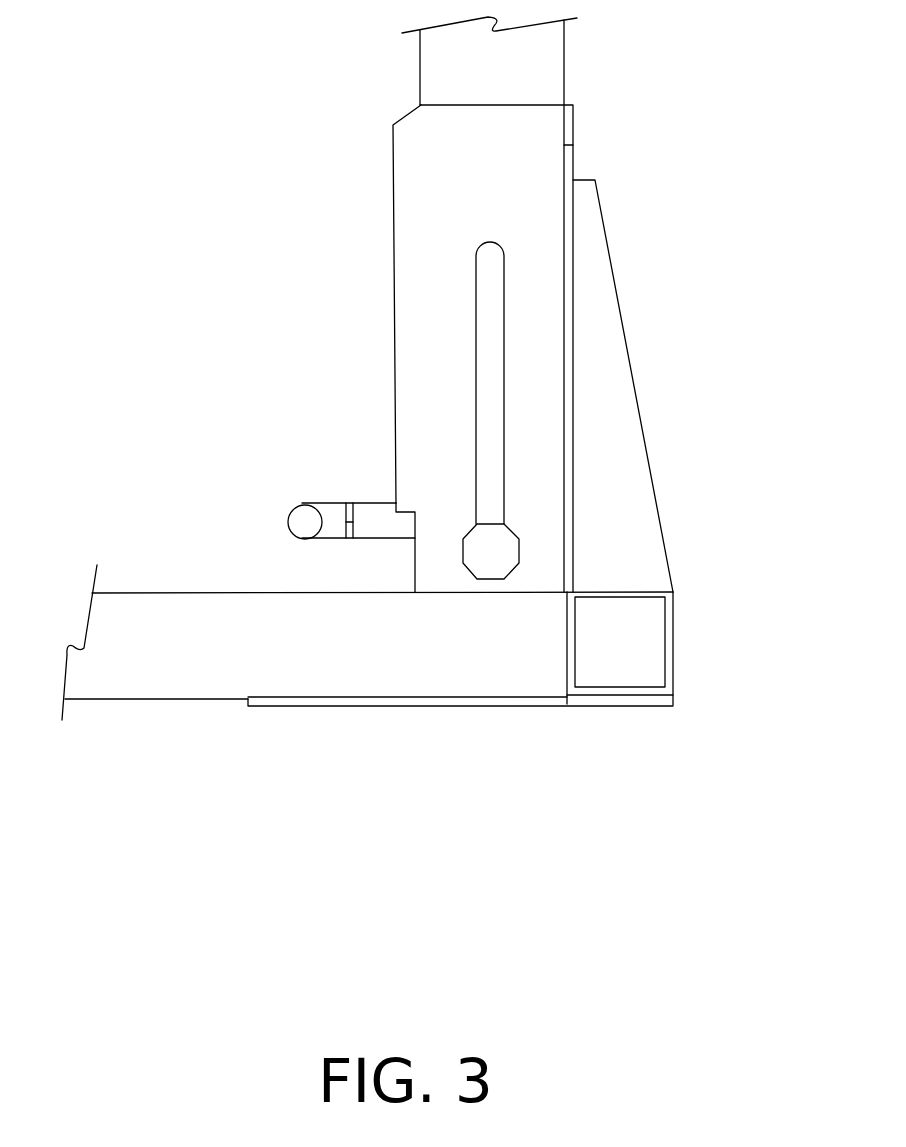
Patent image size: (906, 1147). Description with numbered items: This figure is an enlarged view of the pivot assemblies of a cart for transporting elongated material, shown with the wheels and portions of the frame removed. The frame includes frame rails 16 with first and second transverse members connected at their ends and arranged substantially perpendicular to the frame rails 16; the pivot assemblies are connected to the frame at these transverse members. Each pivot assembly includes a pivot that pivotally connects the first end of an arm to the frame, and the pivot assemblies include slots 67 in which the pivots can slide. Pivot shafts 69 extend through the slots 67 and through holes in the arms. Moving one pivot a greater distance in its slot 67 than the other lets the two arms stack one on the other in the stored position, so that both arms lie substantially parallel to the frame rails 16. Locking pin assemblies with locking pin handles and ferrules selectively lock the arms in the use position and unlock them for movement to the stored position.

The slots 67 is at (502, 391).
The pivot shafts 69 is at (502, 540).
The frame rails 16 is at (120, 700).